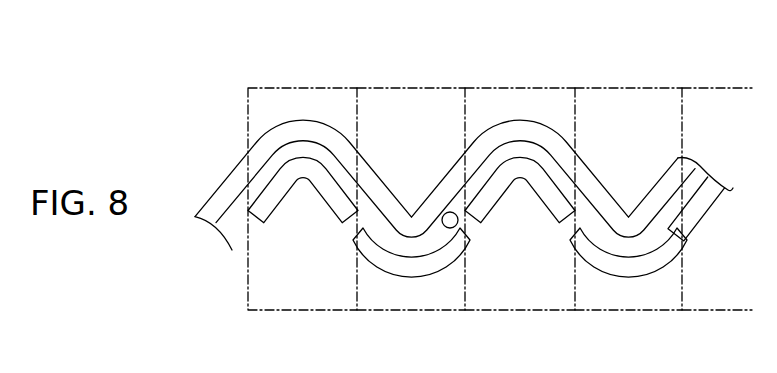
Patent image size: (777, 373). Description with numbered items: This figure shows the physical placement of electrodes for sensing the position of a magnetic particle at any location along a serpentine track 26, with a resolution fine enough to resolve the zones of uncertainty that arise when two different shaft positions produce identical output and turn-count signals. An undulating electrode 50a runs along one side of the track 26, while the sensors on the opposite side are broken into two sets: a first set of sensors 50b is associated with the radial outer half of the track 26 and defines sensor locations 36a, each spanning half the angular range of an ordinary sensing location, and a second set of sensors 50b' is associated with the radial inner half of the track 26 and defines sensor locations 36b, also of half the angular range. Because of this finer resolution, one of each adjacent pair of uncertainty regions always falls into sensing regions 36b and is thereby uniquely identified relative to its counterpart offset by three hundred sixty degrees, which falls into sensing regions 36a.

The sensor locations 36a is at (310, 86).
The sensor locations 36b is at (417, 86).
The electrode 50a is at (222, 190).
The track 26 is at (214, 228).
The sensors 50b is at (486, 207).
The sensors 50b' is at (520, 292).